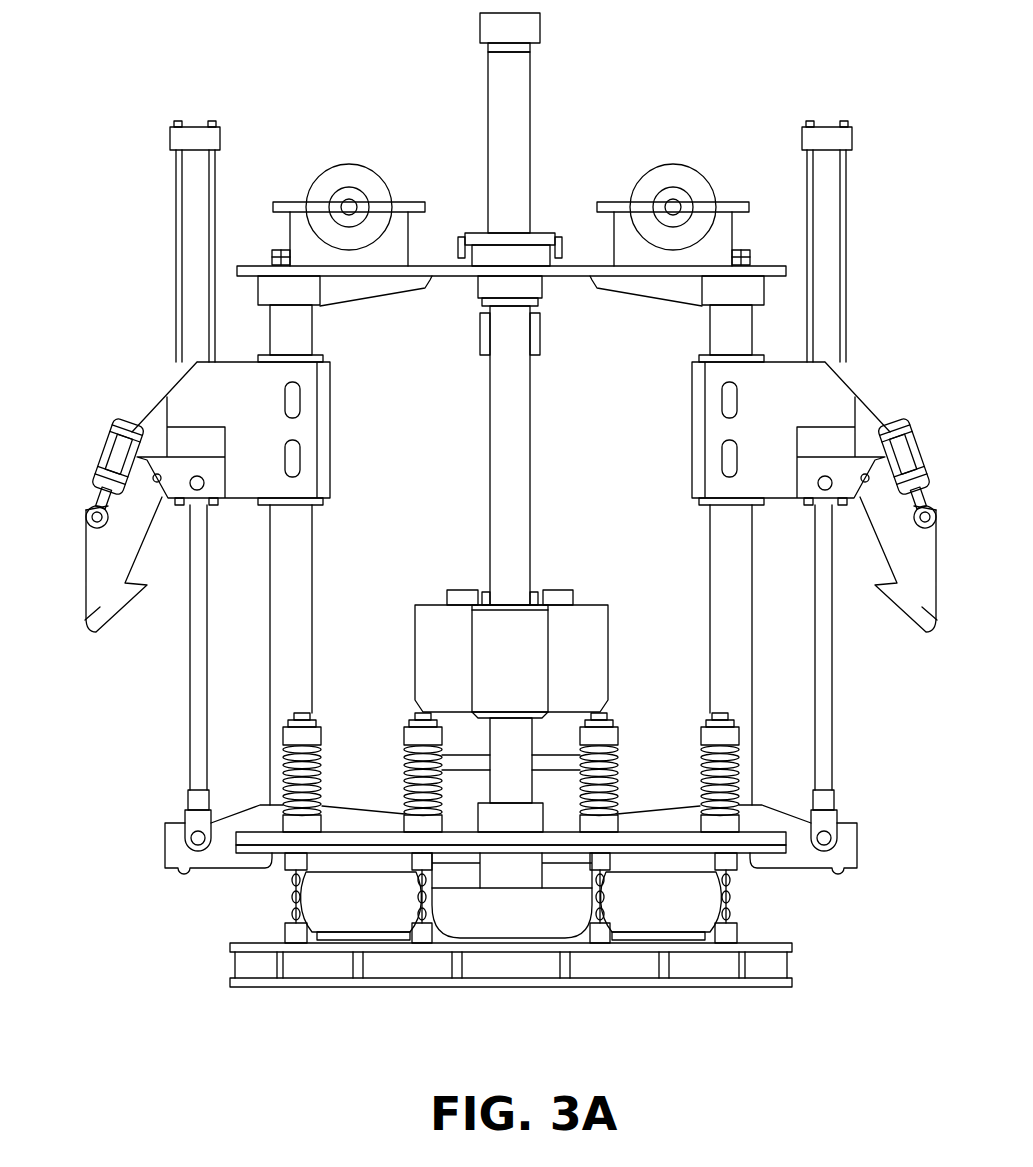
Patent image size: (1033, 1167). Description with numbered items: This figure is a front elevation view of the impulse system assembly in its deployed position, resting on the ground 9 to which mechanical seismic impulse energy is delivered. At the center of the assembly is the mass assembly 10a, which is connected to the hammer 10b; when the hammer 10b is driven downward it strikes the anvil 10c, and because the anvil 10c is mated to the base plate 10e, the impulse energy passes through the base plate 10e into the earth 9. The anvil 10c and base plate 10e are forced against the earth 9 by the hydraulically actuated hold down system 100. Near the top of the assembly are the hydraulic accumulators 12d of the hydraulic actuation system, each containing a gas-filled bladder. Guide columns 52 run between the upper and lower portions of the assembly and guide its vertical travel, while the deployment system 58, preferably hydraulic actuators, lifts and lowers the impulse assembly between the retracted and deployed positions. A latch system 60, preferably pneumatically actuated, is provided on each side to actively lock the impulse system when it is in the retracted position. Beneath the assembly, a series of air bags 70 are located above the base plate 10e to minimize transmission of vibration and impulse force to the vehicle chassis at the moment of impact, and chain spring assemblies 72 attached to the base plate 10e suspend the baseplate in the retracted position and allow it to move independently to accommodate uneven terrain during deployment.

The hydraulically actuated hold down system 100 is at (92, 392).
The hydraulic accumulators 12d is at (350, 164).
The deployment system 58 is at (176, 248).
The guide columns 52 is at (312, 592).
The latch system 60 is at (100, 607).
The mass assembly 10a is at (588, 617).
The hammer 10b is at (462, 735).
The anvil 10c is at (545, 926).
The base plate 10e is at (790, 947).
The chain spring assemblies 72 is at (295, 880).
The air bags 70 is at (727, 888).
The ground 9 is at (326, 1031).